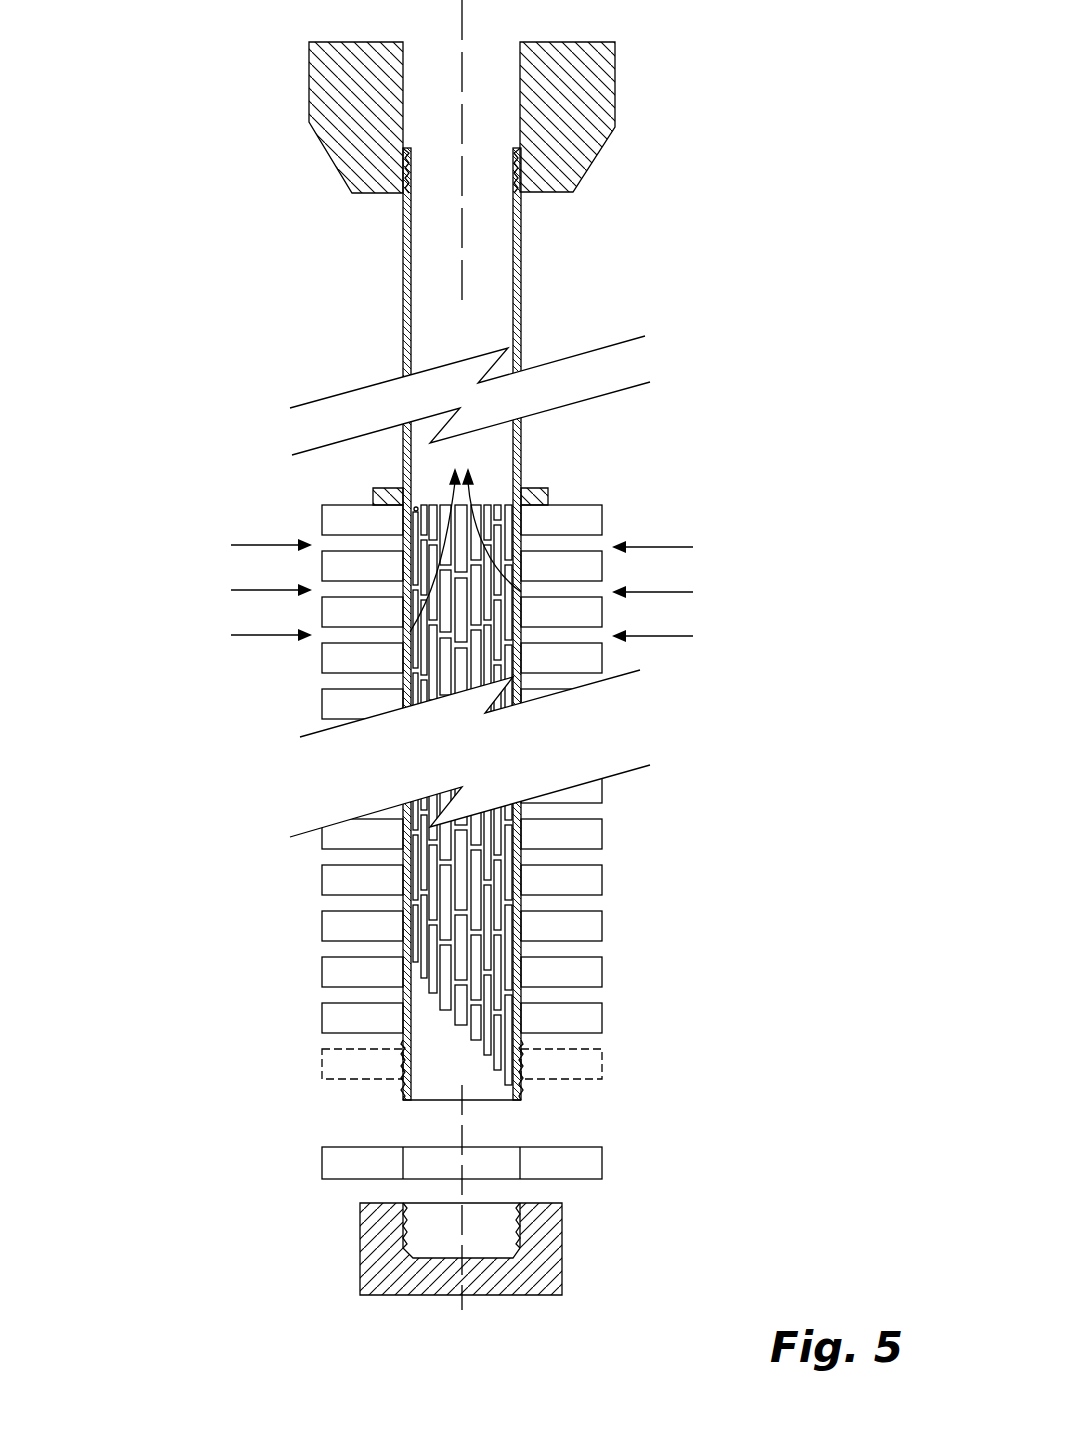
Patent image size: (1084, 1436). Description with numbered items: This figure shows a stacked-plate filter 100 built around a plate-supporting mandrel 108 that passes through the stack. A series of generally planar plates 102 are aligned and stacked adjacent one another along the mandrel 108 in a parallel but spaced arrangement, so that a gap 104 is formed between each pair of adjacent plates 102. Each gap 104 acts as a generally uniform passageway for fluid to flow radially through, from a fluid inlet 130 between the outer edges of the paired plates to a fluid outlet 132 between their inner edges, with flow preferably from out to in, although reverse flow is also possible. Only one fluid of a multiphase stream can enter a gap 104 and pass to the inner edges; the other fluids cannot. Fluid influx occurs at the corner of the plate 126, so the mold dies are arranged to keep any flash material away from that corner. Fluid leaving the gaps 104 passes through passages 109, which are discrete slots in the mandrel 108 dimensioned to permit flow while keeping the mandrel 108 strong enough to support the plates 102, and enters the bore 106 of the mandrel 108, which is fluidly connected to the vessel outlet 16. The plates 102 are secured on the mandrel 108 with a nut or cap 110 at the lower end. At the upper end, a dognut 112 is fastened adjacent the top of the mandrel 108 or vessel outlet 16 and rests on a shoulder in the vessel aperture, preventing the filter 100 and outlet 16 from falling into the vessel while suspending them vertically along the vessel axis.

The filter 100 is at (228, 136).
The dognut 112 is at (347, 143).
The vessel outlet 16 is at (400, 268).
The bore 106 is at (428, 345).
The mandrel 108 is at (427, 673).
The stacked plates 102 is at (323, 660).
The corner of the plate 126 is at (603, 820).
The fluid inlet 130 is at (590, 903).
The fluid outlet 132 is at (590, 912).
The gap 104 is at (570, 948).
The passages 109 is at (460, 1010).
The nut or cap 110 is at (373, 1223).